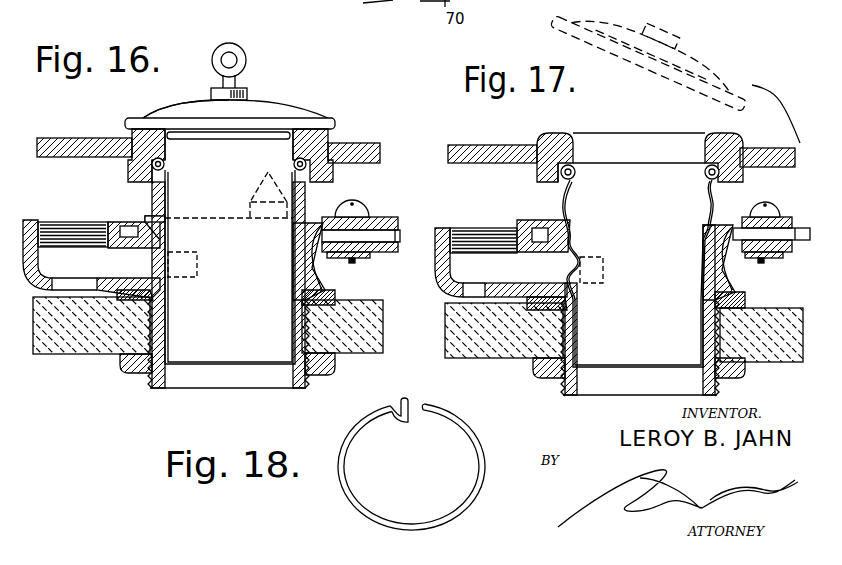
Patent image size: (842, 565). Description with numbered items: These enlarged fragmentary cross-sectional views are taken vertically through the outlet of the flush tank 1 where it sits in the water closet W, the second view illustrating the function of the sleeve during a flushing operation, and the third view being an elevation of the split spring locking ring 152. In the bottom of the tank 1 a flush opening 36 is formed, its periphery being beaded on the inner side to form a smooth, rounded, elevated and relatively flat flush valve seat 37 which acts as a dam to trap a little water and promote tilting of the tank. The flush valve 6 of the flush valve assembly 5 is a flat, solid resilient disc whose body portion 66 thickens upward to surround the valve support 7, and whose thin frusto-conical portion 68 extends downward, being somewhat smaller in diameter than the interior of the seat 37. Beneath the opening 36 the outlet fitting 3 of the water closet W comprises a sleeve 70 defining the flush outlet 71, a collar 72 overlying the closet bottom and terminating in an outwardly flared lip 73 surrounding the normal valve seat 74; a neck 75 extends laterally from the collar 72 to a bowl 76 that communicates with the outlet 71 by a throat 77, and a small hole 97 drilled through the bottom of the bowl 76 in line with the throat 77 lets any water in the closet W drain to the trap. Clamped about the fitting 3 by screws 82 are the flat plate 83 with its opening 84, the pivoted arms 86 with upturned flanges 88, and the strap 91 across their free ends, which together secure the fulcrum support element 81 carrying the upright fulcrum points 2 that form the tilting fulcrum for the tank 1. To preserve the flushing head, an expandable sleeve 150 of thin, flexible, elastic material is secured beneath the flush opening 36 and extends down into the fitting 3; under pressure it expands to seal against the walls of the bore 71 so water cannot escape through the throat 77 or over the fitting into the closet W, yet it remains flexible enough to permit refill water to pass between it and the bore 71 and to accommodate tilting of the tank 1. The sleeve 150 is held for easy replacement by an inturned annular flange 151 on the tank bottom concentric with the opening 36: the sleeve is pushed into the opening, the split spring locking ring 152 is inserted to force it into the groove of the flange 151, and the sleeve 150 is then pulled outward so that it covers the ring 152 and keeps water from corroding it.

In FIG. 16, the flush tank 1 is at (376, 145).
In FIG. 17, the flush tank 1 is at (474, 147).
In FIG. 16, the fulcrum points 2 is at (258, 192).
In FIG. 17, the fulcrum points 2 is at (591, 270).
In FIG. 16, the flush outlet fitting 3 is at (144, 384).
In FIG. 17, the flush outlet fitting 3 is at (553, 388).
In FIG. 16, the flush valve assembly 5 is at (279, 106).
In FIG. 17, the flush valve assembly 5 is at (724, 76).
In FIG. 16, the flush valve 6 is at (320, 124).
In FIG. 16, the valve support 7 is at (244, 61).
In FIG. 16, the flush opening 36 is at (238, 150).
In FIG. 17, the flush opening 36 is at (635, 146).
In FIG. 16, the flush valve seat 37 is at (333, 138).
In FIG. 17, the flush valve seat 37 is at (568, 133).
In FIG. 16, the body portion 66 is at (190, 105).
In FIG. 16, the frusto-conical portion 68 is at (202, 140).
In FIG. 16, the sleeve 70 is at (305, 389).
In FIG. 17, the sleeve 70 is at (563, 396).
In FIG. 16, the flush outlet 71 is at (298, 231).
In FIG. 17, the flush outlet 71 is at (633, 380).
In FIG. 16, the collar 72 is at (336, 297).
In FIG. 17, the collar 72 is at (748, 301).
In FIG. 16, the outwardly flared lip 73 is at (318, 251).
In FIG. 17, the outwardly flared lip 73 is at (728, 243).
In FIG. 16, the normal valve seat 74 is at (328, 221).
In FIG. 17, the normal valve seat 74 is at (727, 229).
In FIG. 16, the neck 75 is at (127, 233).
In FIG. 17, the neck 75 is at (520, 286).
In FIG. 16, the bowl 76 is at (25, 221).
In FIG. 17, the bowl 76 is at (437, 229).
In FIG. 16, the throat 77 is at (78, 246).
In FIG. 17, the throat 77 is at (485, 250).
In FIG. 16, the fulcrum support element 81 is at (378, 221).
In FIG. 17, the fulcrum support element 81 is at (786, 220).
In FIG. 16, the screws 82 is at (360, 209).
In FIG. 17, the screws 82 is at (771, 206).
In FIG. 16, the flat plate 83 is at (405, 225).
In FIG. 17, the flat plate 83 is at (540, 222).
In FIG. 16, the opening 84 is at (158, 215).
In FIG. 16, the arms 86 is at (398, 248).
In FIG. 17, the arms 86 is at (791, 250).
In FIG. 16, the upturned flanges 88 is at (400, 236).
In FIG. 17, the upturned flanges 88 is at (771, 234).
In FIG. 16, the strap 91 is at (368, 254).
In FIG. 17, the strap 91 is at (781, 260).
In FIG. 16, the hole 97 is at (78, 286).
In FIG. 17, the hole 97 is at (488, 285).
In FIG. 16, the expandable sleeve 150 is at (168, 310).
In FIG. 17, the expandable sleeve 150 is at (573, 198).
In FIG. 16, the inturned annular flange 151 is at (152, 156).
In FIG. 17, the inturned annular flange 151 is at (537, 173).
In FIG. 16, the split spring locking ring 152 is at (165, 167).
In FIG. 17, the split spring locking ring 152 is at (577, 166).
In FIG. 18, the split spring locking ring 152 is at (476, 448).
In FIG. 16, the water closet W is at (65, 347).
In FIG. 17, the water closet W is at (492, 362).